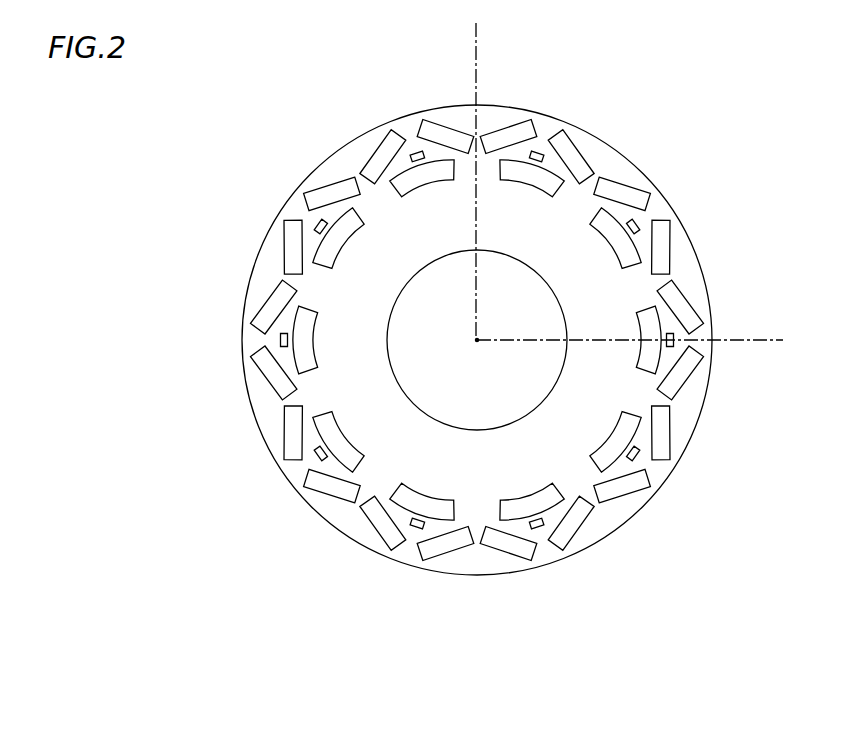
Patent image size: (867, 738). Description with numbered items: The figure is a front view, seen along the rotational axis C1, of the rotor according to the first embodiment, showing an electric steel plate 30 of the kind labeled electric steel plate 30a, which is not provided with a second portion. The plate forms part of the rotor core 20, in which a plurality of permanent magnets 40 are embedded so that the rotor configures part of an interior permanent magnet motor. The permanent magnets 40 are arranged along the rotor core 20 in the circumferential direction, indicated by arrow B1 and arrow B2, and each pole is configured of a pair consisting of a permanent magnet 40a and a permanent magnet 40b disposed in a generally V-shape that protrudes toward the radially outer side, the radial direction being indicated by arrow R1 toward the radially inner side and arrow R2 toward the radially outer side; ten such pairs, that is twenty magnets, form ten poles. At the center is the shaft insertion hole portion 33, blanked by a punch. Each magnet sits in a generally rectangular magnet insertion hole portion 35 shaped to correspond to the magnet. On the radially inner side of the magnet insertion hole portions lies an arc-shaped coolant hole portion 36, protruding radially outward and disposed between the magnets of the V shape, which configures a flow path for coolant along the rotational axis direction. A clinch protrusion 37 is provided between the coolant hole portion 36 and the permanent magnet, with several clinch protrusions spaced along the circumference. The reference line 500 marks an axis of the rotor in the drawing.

The rotor core 20 is at (438, 327).
The electric steel plate 30 is at (477, 331).
The electric steel plate 30a is at (331, 152).
The shaft insertion hole portion 33 is at (389, 326).
The magnet insertion hole portion 35 is at (283, 262).
The coolant hole portion 36 is at (655, 313).
The clinch protrusion 37 is at (317, 458).
The permanent magnets 40 is at (204, 305).
The permanent magnet 40a is at (258, 313).
The permanent magnet 40b is at (223, 305).
The reference axis line 500 is at (480, 37).
The rotational axis C1 is at (475, 338).
The arrow R1 is at (611, 554).
The arrow R2 is at (650, 608).
The arrow B1 is at (470, 616).
The arrow B2 is at (530, 611).